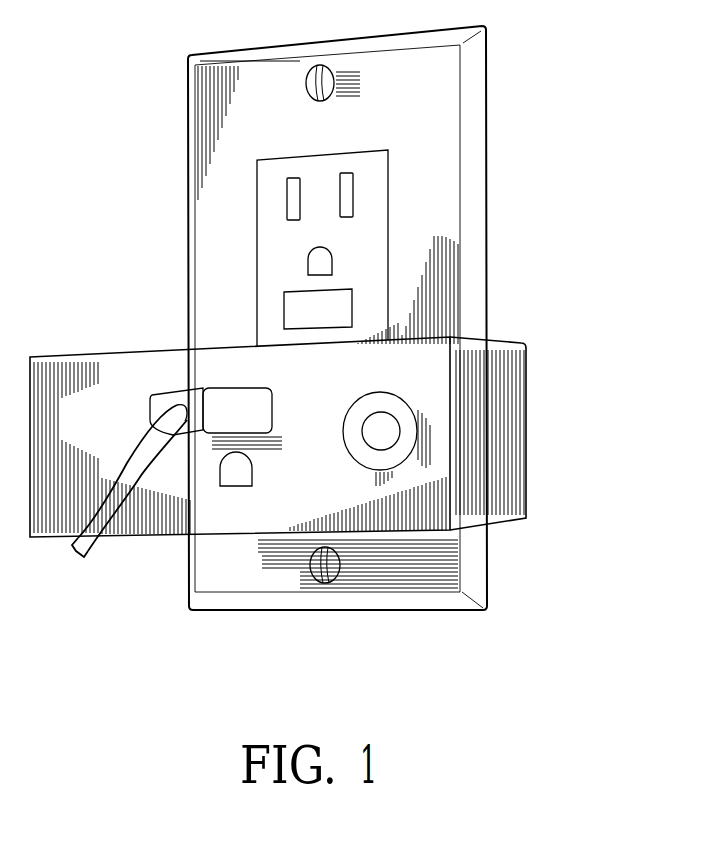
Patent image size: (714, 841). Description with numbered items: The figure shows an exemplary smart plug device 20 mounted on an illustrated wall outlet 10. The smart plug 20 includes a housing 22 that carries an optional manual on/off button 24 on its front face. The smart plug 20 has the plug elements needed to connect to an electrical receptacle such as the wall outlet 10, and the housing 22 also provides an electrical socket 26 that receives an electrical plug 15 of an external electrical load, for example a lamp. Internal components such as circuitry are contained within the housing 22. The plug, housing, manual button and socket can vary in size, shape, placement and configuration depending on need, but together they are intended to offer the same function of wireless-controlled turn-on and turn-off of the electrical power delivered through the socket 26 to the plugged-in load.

The wall outlet 10 is at (375, 222).
The electrical plug 15 is at (182, 396).
The smart plug device 20 is at (334, 440).
The housing 22 is at (513, 372).
The manual on/off button 24 is at (407, 443).
The electrical socket 26 is at (235, 473).